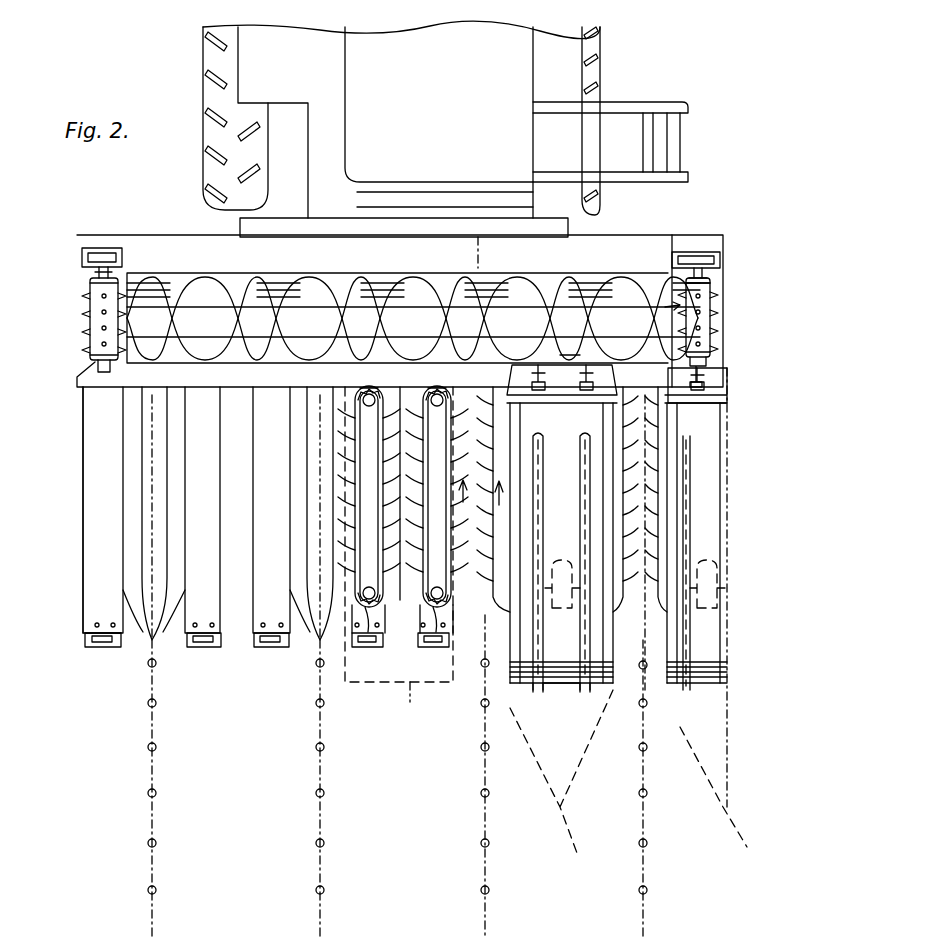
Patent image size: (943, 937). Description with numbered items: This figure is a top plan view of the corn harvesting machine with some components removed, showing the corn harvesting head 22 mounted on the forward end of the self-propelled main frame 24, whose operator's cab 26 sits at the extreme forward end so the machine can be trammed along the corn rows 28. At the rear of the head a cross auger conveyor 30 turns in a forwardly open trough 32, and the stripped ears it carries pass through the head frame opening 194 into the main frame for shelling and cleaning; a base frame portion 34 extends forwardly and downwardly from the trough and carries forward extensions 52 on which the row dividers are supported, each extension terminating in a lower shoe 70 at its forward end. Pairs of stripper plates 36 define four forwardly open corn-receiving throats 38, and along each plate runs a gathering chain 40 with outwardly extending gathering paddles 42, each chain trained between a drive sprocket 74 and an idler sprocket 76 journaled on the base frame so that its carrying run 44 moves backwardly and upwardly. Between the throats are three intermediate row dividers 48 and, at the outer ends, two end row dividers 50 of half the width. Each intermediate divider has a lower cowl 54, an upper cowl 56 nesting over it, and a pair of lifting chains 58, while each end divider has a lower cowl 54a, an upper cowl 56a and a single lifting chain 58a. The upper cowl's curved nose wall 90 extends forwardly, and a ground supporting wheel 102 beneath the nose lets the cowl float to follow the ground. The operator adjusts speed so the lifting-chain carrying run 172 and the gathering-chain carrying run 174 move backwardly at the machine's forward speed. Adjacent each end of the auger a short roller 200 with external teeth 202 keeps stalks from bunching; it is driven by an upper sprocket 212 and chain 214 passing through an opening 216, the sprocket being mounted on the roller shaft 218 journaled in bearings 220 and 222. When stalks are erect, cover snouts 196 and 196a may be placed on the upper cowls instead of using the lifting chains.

The corn harvesting head 22 is at (740, 544).
The main frame 24 is at (255, 122).
The operator's cab 26 is at (404, 132).
The corn rows 28 is at (142, 782).
The cross auger conveyor 30 is at (210, 312).
The trough 32 is at (132, 366).
The base frame portion 34 is at (73, 549).
The stripper plates 36 is at (228, 541).
The corn-receiving throats 38 is at (173, 643).
The gathering chains 40 is at (338, 535).
The gathering paddles 42 is at (338, 482).
The carrying run 44 is at (504, 378).
The intermediate row dividers 48 is at (578, 350).
The end row dividers 50 is at (98, 670).
The forward extensions 52 is at (93, 470).
The lower cowl 54 is at (630, 380).
The lower cowl 54a is at (713, 410).
The upper cowl 56 is at (561, 546).
The upper cowl 56a is at (713, 470).
The lifting chains 58 is at (536, 694).
The lifting chain 58a is at (688, 694).
The finger shoe 70 is at (85, 640).
The drive sprocket 74 is at (430, 386).
The idler sprocket 76 is at (428, 600).
The nose wall 90 is at (563, 702).
The ground supporting wheel 102 is at (570, 605).
The carrying run 172 is at (550, 526).
The carrying run 174 is at (494, 608).
The head frame opening 194 is at (479, 250).
The row-dividing cover snout 196 is at (561, 786).
The row-dividing cover snout 196a is at (741, 793).
The roller 200 is at (95, 325).
The external teeth 202 is at (688, 326).
The upper sprocket 212 is at (706, 258).
The chain 214 is at (680, 256).
The opening 216 is at (718, 255).
The roller shaft 218 is at (706, 266).
The bearing 220 is at (706, 282).
The bearing 222 is at (708, 362).